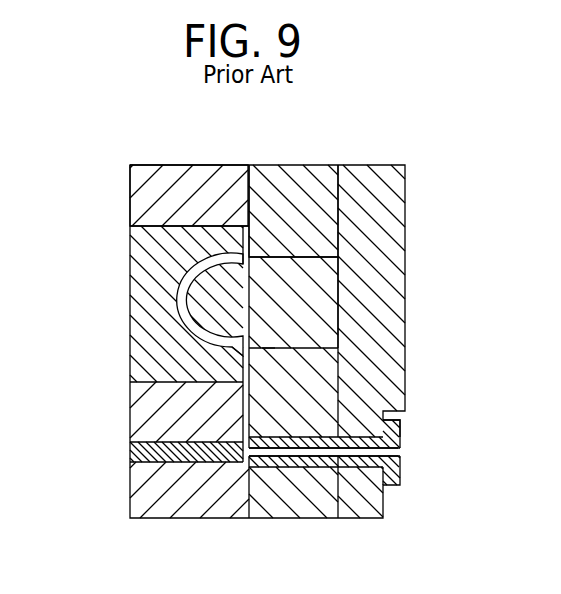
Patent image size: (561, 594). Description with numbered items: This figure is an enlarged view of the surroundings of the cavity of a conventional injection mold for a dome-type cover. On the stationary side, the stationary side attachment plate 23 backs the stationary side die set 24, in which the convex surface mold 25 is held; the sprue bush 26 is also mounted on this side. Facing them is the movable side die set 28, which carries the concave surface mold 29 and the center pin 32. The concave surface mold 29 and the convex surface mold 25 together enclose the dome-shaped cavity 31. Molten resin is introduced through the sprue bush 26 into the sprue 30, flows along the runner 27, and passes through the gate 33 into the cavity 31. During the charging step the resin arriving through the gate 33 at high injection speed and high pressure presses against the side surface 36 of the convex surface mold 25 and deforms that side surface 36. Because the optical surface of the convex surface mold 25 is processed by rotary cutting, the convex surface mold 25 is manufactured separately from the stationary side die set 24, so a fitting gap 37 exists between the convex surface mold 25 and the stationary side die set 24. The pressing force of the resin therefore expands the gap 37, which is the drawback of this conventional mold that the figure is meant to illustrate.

The stationary side attachment plate 23 is at (393, 217).
The stationary side die set 24 is at (322, 178).
The convex surface mold 25 is at (323, 307).
The sprue bush 26 is at (395, 433).
The runner 27 is at (247, 407).
The movable side die set 28 is at (177, 177).
The concave surface mold 29 is at (138, 248).
The sprue 30 is at (317, 452).
The cavity 31 is at (177, 299).
The center pin 32 is at (138, 452).
The gate 33 is at (240, 357).
The side surface 36 is at (238, 262).
The fitting gap 37 is at (267, 348).